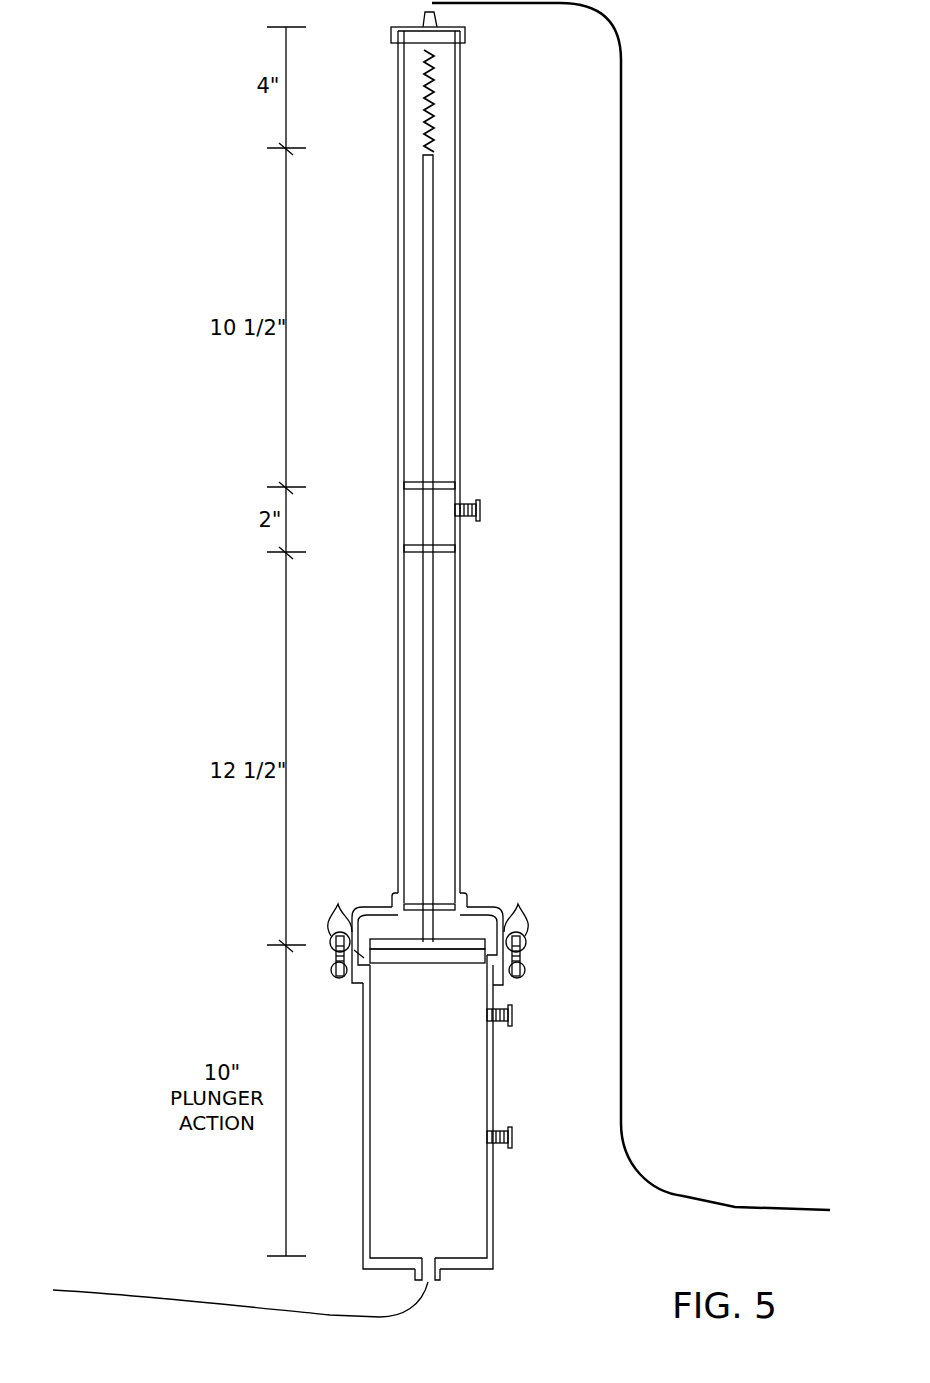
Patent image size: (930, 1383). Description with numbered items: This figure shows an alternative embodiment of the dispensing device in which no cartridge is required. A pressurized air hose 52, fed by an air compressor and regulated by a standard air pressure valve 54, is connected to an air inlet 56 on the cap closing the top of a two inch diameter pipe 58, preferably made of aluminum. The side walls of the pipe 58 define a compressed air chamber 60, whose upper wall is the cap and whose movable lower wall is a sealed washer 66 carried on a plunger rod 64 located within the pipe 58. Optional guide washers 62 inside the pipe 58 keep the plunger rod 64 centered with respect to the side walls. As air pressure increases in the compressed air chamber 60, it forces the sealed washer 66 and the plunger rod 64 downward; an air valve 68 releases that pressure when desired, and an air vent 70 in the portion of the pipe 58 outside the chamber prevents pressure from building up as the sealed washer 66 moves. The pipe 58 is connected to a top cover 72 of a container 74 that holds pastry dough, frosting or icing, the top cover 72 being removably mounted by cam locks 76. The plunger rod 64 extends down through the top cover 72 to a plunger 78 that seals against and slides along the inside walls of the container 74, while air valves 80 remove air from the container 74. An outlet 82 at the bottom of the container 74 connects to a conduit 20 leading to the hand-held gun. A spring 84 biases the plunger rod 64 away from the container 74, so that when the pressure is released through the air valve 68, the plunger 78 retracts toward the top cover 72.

The conduit 20 is at (131, 1293).
The pressurized air hose 52 is at (683, 1194).
The air pressure valve 54 is at (468, 36).
The air inlet 56 is at (424, 16).
The pipe 58 is at (466, 258).
The compressed air chamber 60 is at (445, 200).
The guide washers 62 is at (443, 484).
The plunger rod 64 is at (435, 333).
The sealed washer 66 is at (443, 548).
The air valve 68 is at (482, 508).
The air vent 70 is at (398, 883).
The top cover 72 is at (367, 905).
The container 74 is at (495, 1213).
The cam locks 76 is at (330, 940).
The plunger 78 is at (428, 952).
The air valves 80 is at (514, 1015).
The outlet 82 is at (440, 1284).
The spring 84 is at (432, 123).